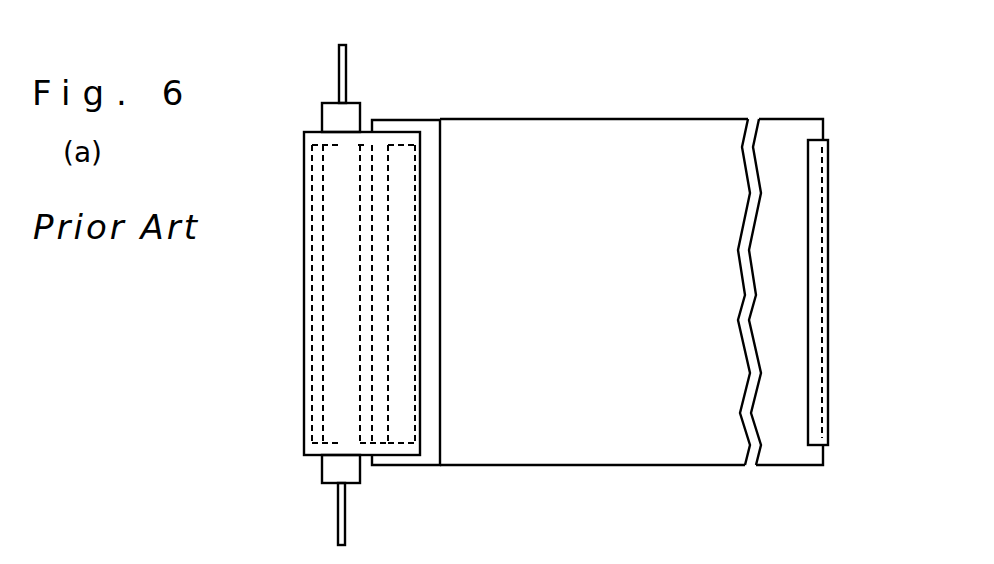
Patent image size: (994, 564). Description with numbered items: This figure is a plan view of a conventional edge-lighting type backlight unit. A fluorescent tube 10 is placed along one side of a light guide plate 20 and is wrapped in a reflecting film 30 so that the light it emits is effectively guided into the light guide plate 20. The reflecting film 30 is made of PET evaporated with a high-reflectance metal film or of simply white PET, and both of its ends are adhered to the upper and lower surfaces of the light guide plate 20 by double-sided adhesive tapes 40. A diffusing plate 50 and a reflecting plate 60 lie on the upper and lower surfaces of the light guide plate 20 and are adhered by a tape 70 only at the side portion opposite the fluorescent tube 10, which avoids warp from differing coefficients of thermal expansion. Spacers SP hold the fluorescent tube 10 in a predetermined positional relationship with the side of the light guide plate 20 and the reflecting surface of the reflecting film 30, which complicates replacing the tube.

The fluorescent tube 10 is at (334, 113).
The light guide plate 20 is at (428, 125).
The reflecting film 30 is at (305, 263).
The double-sided adhesive tapes 40 is at (403, 133).
The diffusing plate 50 is at (631, 256).
The reflecting plate 60 is at (593, 128).
The tape 70 is at (828, 260).
The spacers SP is at (315, 132).